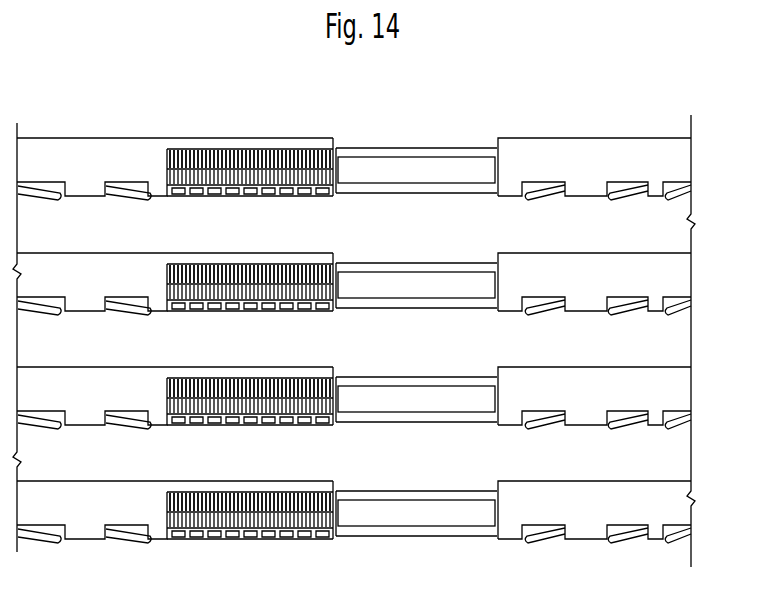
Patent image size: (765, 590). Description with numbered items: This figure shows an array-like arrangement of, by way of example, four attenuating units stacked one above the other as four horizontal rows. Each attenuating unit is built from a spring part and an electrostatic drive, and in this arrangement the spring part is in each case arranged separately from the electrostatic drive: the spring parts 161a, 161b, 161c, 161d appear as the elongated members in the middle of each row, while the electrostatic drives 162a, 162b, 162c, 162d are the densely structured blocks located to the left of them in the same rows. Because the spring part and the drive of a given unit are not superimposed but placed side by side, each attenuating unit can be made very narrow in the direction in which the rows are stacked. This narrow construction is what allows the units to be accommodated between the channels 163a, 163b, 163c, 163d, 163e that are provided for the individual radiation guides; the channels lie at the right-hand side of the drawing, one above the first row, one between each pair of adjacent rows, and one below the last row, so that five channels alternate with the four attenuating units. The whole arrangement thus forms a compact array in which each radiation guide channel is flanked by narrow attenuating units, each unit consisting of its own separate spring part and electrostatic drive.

The spring part 161a is at (427, 147).
The spring part 161b is at (416, 266).
The spring part 161c is at (416, 381).
The spring part 161d is at (416, 495).
The electrostatic drive 162a is at (232, 108).
The electrostatic drive 162b is at (250, 262).
The electrostatic drive 162c is at (250, 378).
The electrostatic drive 162d is at (250, 491).
The channel 163a is at (587, 127).
The channel 163b is at (594, 264).
The channel 163c is at (594, 379).
The channel 163d is at (594, 493).
The channel 163e is at (602, 573).